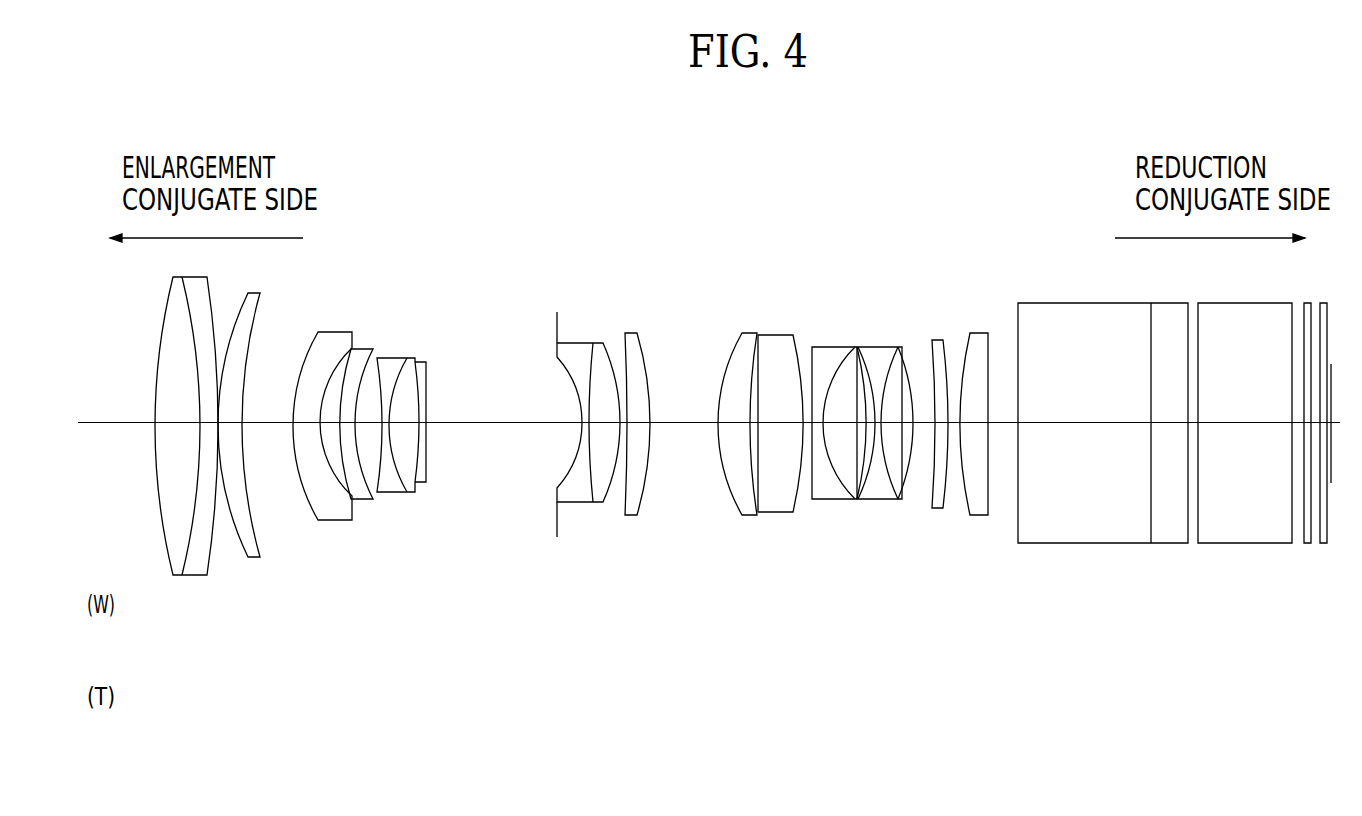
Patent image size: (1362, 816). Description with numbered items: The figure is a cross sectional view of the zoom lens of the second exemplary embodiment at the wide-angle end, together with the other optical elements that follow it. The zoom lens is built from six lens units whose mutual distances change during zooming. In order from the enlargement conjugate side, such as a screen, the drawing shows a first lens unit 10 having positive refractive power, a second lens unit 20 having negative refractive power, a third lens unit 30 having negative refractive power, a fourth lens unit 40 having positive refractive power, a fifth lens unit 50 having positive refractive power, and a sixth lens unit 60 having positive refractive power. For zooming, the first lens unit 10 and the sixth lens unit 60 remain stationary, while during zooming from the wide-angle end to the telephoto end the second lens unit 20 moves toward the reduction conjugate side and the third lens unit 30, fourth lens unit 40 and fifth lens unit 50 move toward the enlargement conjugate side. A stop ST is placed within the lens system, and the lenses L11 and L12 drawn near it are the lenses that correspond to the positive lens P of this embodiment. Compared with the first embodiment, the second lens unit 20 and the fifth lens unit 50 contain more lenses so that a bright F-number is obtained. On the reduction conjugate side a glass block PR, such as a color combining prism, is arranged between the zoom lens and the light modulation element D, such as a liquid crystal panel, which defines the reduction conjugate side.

The first lens unit 10 is at (162, 598).
The second lens unit 20 is at (400, 683).
The third lens unit 30 is at (562, 598).
The fourth lens unit 40 is at (646, 475).
The fifth lens unit 50 is at (833, 475).
The sixth lens unit 60 is at (970, 598).
The stop ST is at (557, 312).
The lens L11 is at (632, 333).
The lens L12 is at (745, 333).
The glass block PR is at (1330, 598).
The light modulation element D is at (1340, 408).